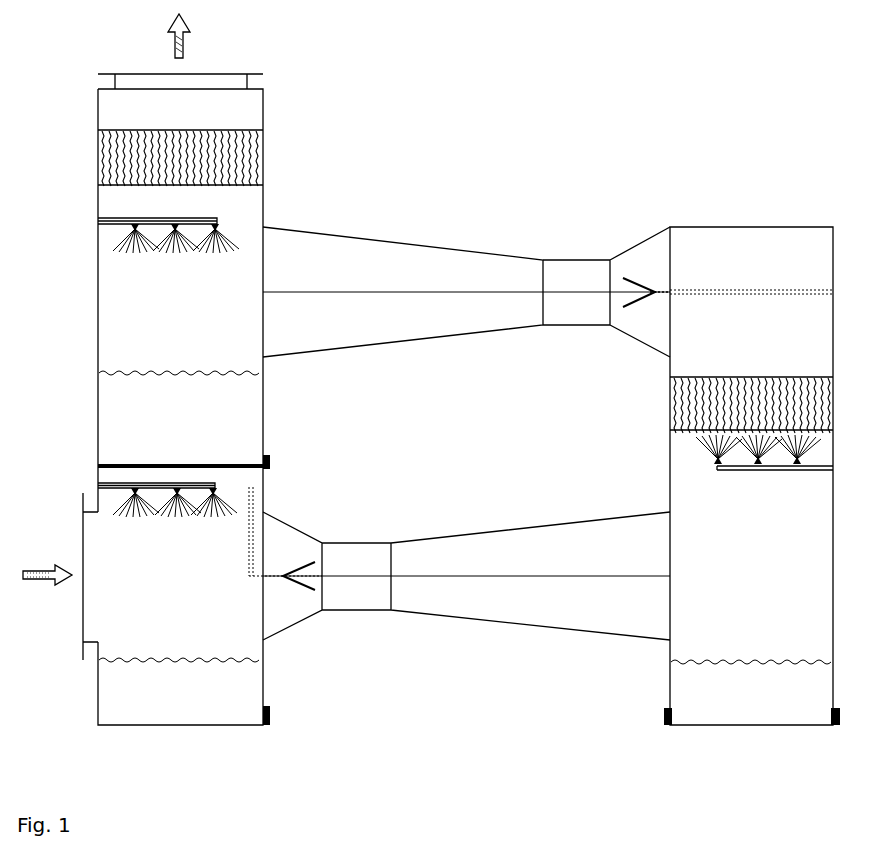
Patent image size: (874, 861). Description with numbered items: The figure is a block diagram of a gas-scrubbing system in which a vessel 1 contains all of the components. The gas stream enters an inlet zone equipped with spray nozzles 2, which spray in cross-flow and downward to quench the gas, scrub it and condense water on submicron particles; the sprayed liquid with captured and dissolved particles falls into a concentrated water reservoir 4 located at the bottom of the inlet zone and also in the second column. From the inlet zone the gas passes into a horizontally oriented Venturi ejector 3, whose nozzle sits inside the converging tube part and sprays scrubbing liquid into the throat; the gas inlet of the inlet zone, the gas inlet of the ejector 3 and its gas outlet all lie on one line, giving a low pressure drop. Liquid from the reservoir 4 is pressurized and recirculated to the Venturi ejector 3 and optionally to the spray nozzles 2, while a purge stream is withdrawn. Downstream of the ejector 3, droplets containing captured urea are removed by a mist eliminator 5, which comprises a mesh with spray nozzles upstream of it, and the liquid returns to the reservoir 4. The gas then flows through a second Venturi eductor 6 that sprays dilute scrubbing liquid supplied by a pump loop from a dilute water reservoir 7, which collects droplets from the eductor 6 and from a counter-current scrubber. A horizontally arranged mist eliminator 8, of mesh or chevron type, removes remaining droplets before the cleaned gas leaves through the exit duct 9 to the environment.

The vessel 1 is at (469, 407).
The spray nozzles 2 is at (172, 571).
The Venturi ejector 3 is at (466, 576).
The concentrated water reservoir 4 is at (465, 689).
The mist eliminator 5 is at (751, 417).
The second Venturi eductor 6 is at (548, 292).
The dilute water reservoir 7 is at (178, 331).
The mist eliminator 8 is at (180, 151).
The exit duct 9 is at (180, 50).